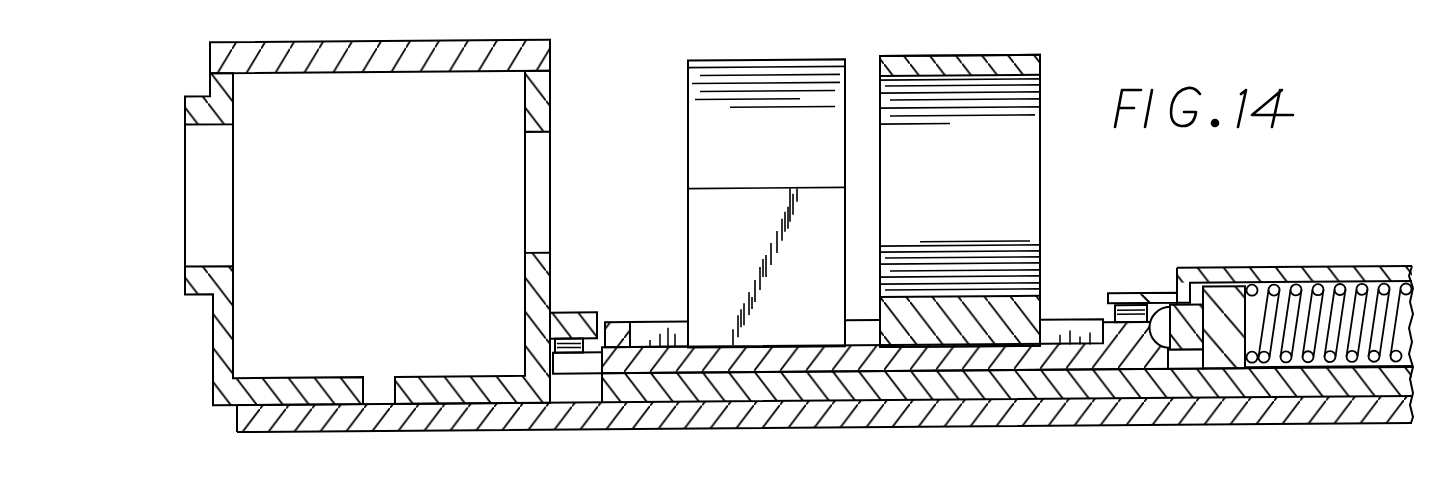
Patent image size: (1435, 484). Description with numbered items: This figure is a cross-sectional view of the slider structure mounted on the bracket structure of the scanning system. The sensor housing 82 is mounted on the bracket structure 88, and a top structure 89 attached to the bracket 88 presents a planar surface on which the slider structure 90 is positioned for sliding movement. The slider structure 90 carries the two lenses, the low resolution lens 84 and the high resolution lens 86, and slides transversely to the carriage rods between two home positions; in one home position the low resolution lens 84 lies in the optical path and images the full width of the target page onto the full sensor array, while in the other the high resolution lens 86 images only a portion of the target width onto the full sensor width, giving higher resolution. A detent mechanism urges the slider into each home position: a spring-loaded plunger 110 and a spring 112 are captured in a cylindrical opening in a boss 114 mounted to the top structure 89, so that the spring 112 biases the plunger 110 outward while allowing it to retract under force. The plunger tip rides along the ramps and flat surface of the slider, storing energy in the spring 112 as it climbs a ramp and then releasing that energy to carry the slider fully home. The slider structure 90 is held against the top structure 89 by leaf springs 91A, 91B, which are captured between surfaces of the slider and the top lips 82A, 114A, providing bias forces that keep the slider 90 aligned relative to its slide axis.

The sensor housing 82 is at (393, 41).
The top lip 82A is at (577, 314).
The low resolution lens 84 is at (782, 63).
The high resolution lens 86 is at (982, 60).
The bracket structure 88 is at (637, 422).
The top structure 89 is at (713, 392).
The slider structure 90 is at (655, 324).
The leaf spring 91A is at (565, 356).
The leaf spring 91B is at (1115, 316).
The spring-loaded plunger 110 is at (1170, 311).
The spring 112 is at (1315, 297).
The boss 114 is at (1358, 274).
The top lip 114A is at (1127, 299).